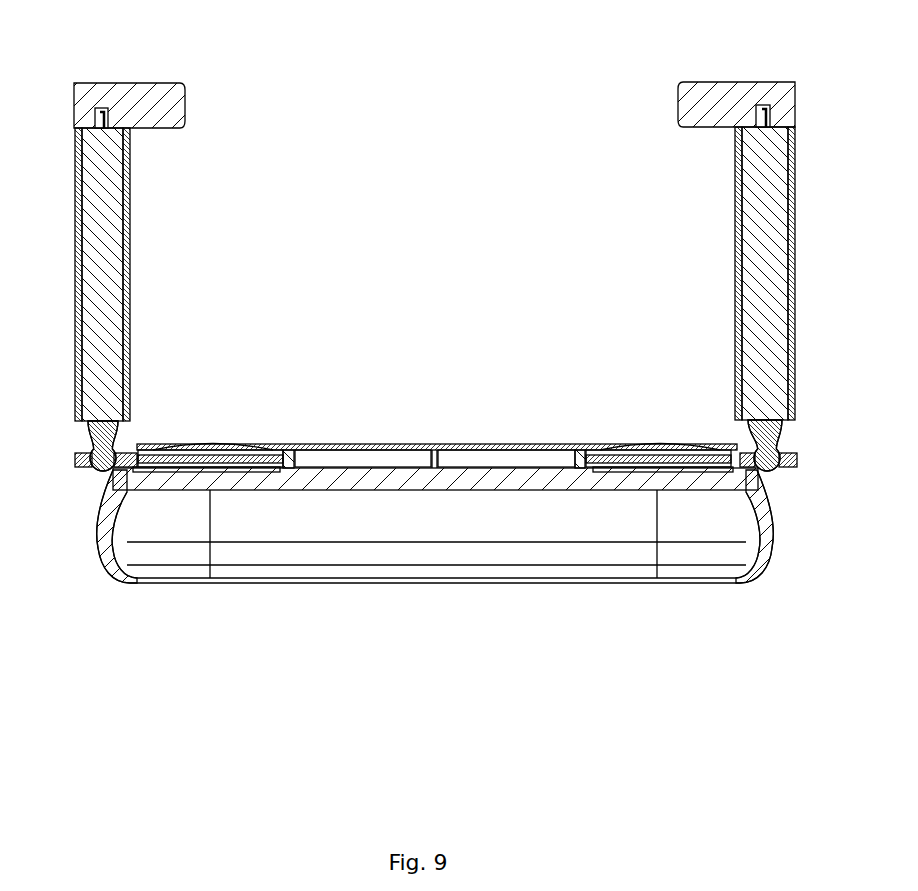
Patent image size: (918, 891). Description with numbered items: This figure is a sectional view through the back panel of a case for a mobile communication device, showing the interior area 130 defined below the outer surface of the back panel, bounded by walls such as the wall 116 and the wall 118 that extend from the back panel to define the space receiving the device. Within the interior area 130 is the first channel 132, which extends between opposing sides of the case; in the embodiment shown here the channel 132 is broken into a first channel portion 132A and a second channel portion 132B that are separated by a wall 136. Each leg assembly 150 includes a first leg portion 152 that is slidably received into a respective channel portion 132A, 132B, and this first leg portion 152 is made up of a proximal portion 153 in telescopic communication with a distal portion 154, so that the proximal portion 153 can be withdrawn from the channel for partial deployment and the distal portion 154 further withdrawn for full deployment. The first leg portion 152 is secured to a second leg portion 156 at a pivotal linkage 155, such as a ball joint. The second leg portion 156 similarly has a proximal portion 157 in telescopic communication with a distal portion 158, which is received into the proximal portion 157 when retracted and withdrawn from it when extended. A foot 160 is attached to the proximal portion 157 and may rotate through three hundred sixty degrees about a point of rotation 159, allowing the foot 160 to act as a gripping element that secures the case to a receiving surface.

The wall 116 is at (451, 531).
The wall 118 is at (772, 522).
The interior area 130 is at (358, 445).
The first channel 132 is at (365, 480).
The first channel portion 132A is at (408, 450).
The second channel portion 132B is at (522, 450).
The wall 136 is at (437, 467).
The leg assembly 150 is at (228, 135).
The first leg portion 152 is at (108, 478).
The proximal portion 153 is at (205, 453).
The distal portion 154 is at (134, 473).
The pivotal linkage 155 is at (128, 440).
The second leg portion 156 is at (152, 295).
The proximal portion 157 is at (132, 327).
The distal portion 158 is at (132, 205).
The point of rotation 159 is at (112, 115).
The foot 160 is at (122, 83).